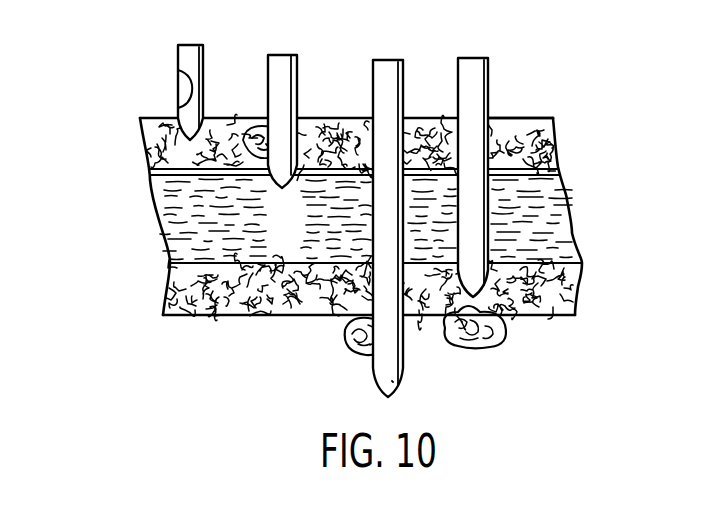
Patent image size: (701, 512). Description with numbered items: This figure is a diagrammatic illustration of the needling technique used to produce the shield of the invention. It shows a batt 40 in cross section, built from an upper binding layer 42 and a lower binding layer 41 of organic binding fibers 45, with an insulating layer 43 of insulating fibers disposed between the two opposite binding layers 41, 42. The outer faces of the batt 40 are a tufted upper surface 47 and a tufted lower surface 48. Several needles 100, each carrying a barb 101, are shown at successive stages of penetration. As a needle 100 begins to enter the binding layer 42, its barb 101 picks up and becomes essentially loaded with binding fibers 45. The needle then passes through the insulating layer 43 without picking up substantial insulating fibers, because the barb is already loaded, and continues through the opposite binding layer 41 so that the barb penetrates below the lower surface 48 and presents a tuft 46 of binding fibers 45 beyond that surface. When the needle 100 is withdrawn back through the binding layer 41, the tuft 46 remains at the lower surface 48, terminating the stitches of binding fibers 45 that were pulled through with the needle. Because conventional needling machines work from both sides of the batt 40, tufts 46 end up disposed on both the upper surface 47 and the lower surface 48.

The batt 40 is at (138, 214).
The binding layer 41 is at (167, 285).
The binding layer 42 is at (140, 150).
The insulating layer 43 is at (572, 234).
The binding fibers 45 is at (253, 195).
The tufts 46 is at (345, 346).
The upper surface 47 is at (523, 117).
The lower surface 48 is at (170, 320).
The needle 100 is at (294, 198).
The barb 101 is at (177, 88).